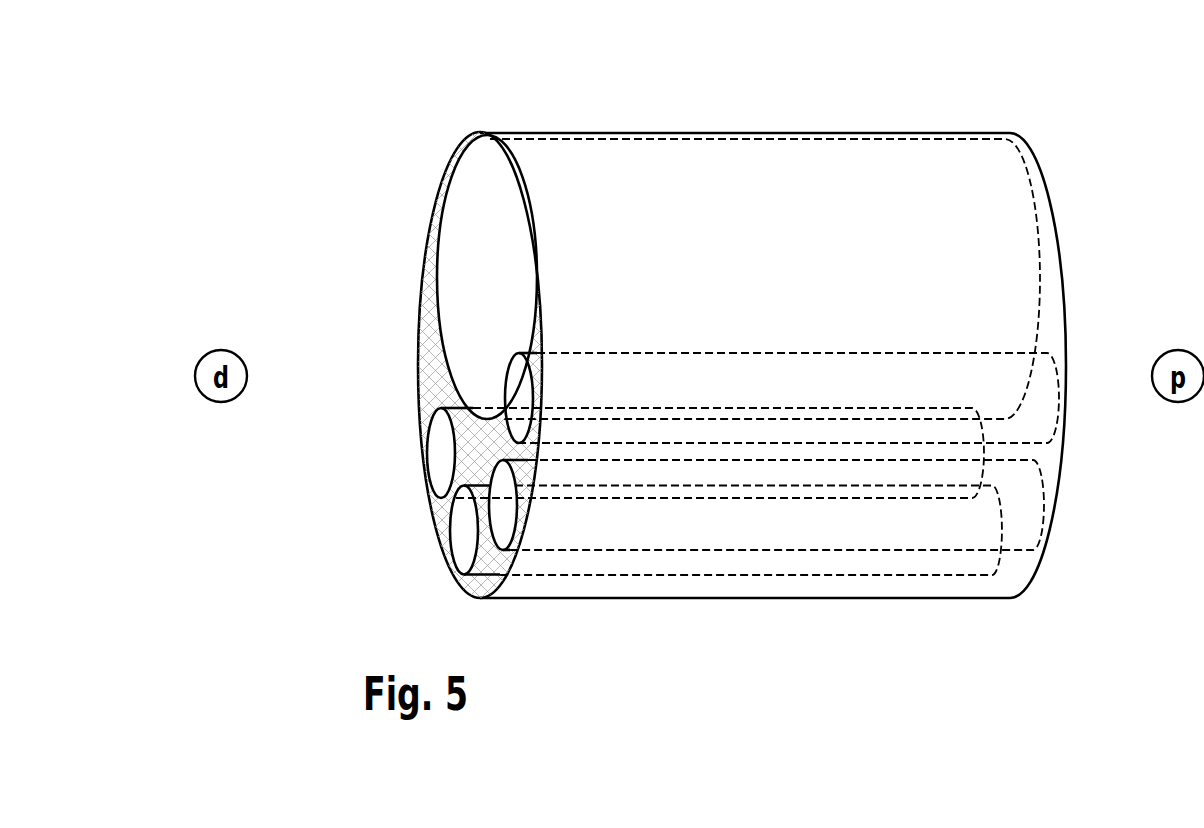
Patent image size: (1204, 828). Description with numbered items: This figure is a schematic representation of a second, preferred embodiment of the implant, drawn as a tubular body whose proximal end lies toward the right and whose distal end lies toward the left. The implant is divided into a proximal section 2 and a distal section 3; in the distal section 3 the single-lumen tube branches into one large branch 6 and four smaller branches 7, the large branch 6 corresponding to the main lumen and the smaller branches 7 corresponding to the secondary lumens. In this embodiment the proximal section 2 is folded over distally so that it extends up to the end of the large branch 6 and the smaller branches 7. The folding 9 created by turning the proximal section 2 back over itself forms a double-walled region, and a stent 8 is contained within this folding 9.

The proximal section 2 is at (804, 131).
The distal section 3 is at (440, 520).
The large branch 6 is at (437, 214).
The smaller branch 7 is at (430, 425).
The stent 8 is at (433, 380).
The folding 9 is at (430, 317).